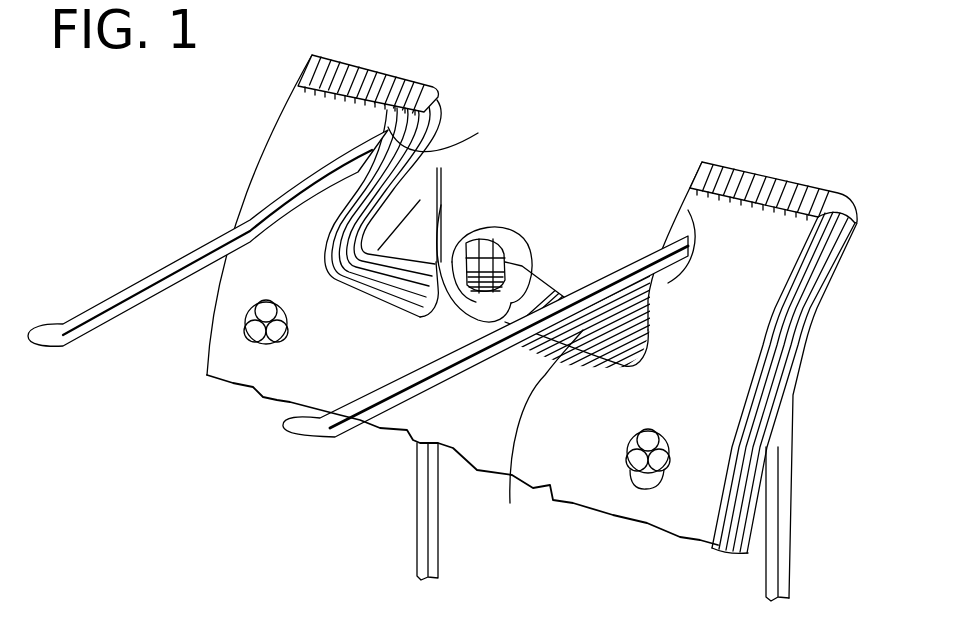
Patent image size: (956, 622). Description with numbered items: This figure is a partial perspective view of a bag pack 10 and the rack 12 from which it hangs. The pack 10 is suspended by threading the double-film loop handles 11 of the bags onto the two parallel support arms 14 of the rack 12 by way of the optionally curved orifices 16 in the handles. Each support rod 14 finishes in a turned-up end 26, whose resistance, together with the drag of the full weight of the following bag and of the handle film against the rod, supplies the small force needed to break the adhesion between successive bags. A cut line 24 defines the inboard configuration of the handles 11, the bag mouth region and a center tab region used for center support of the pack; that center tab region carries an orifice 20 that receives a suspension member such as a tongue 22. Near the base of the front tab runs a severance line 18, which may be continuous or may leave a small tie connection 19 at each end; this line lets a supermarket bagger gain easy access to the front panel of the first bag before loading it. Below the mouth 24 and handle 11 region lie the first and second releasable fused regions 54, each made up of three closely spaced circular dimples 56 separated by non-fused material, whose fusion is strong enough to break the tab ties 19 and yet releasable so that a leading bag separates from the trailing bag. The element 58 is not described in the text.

The bag pack 10 is at (607, 522).
The handles 11 is at (258, 152).
The rack 12 is at (790, 462).
The parallel arms 14 is at (145, 277).
The curved orifices 16 is at (683, 220).
The severance line 18 is at (448, 237).
The tie connection 19 is at (536, 268).
The orifice 20 is at (502, 240).
The tongue 22 is at (483, 224).
The cut line 24 is at (440, 104).
The turned-up ends 26 is at (303, 440).
The releasable fused regions 54 is at (286, 308).
The dimples 56 is at (290, 322).
The cable 58 is at (255, 312).